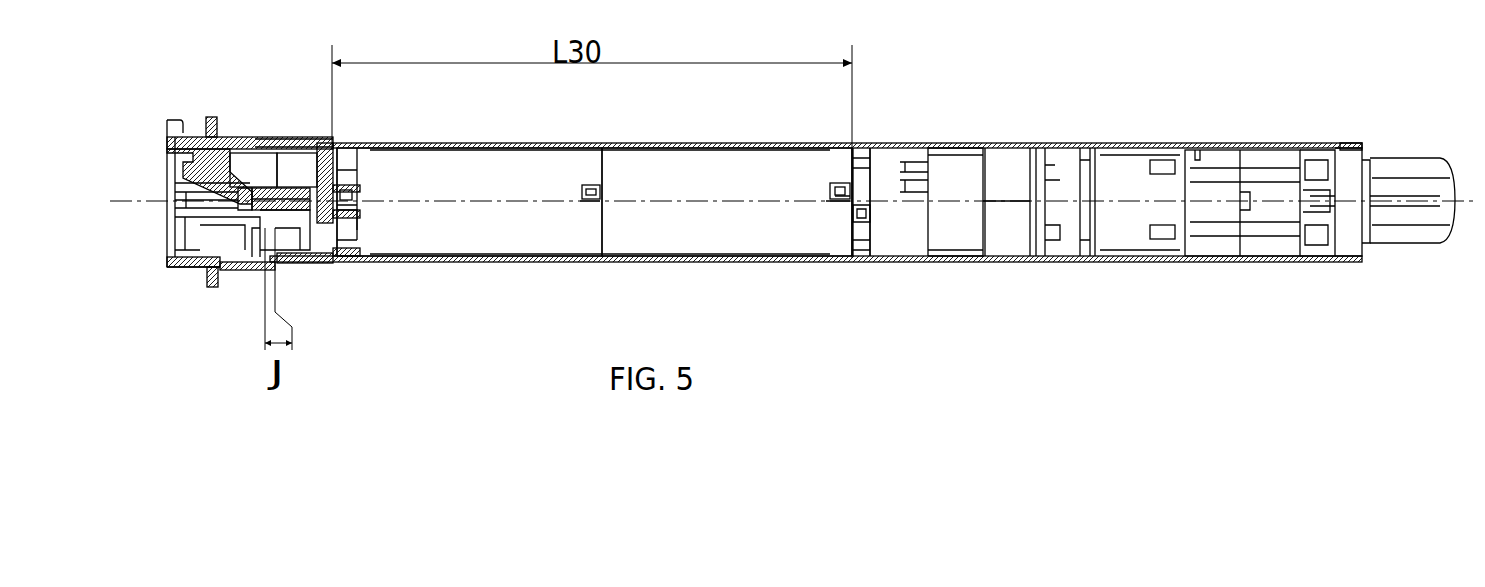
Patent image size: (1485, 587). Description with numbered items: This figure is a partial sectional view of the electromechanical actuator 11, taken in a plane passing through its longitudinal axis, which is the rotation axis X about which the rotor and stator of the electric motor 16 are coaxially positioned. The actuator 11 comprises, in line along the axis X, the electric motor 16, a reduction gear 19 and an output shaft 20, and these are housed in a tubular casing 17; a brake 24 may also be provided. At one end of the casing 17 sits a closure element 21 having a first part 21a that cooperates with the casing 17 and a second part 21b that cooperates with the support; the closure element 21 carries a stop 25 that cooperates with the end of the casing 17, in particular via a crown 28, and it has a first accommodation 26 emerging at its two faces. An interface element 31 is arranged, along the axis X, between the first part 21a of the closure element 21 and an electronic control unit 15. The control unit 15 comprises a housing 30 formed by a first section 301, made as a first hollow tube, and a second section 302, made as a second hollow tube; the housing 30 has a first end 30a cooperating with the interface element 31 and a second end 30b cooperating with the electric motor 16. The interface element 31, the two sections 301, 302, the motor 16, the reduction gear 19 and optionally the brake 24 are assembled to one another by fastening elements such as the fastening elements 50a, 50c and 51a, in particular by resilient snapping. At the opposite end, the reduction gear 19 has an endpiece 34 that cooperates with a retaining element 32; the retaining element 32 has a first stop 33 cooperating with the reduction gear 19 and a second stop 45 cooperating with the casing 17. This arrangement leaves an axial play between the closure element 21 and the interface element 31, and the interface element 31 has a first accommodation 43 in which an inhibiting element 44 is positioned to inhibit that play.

The electromechanical actuator 11 is at (200, 103).
The electronic control unit 15 is at (528, 238).
The electric motor 16 is at (903, 247).
The casing 17 is at (982, 142).
The reduction gear 19 is at (1228, 248).
The output shaft 20 is at (1420, 222).
The closure element 21 is at (190, 204).
The first part of closure element 21a is at (232, 148).
The second part of closure element 21b is at (180, 270).
The brake 24 is at (1124, 175).
The stop 25 is at (213, 290).
The first accommodation of closure element 26 is at (232, 200).
The crown 28 is at (274, 140).
The housing 30 is at (492, 158).
The first end of housing 30a is at (357, 160).
The second end of housing 30b is at (862, 232).
The first section of housing 301 is at (445, 240).
The second section of housing 302 is at (742, 240).
The interface element 31 is at (320, 148).
The retaining element 32 is at (1345, 237).
The first stop 33 is at (1312, 204).
The endpiece 34 is at (1305, 158).
The first accommodation of interface element 43 is at (318, 210).
The inhibiting element 44 is at (263, 195).
The second stop 45 is at (1372, 145).
The fastening element 50a is at (826, 188).
The fastening element 50c is at (352, 202).
The fastening element 51a is at (580, 190).
The rotation axis X is at (1000, 202).